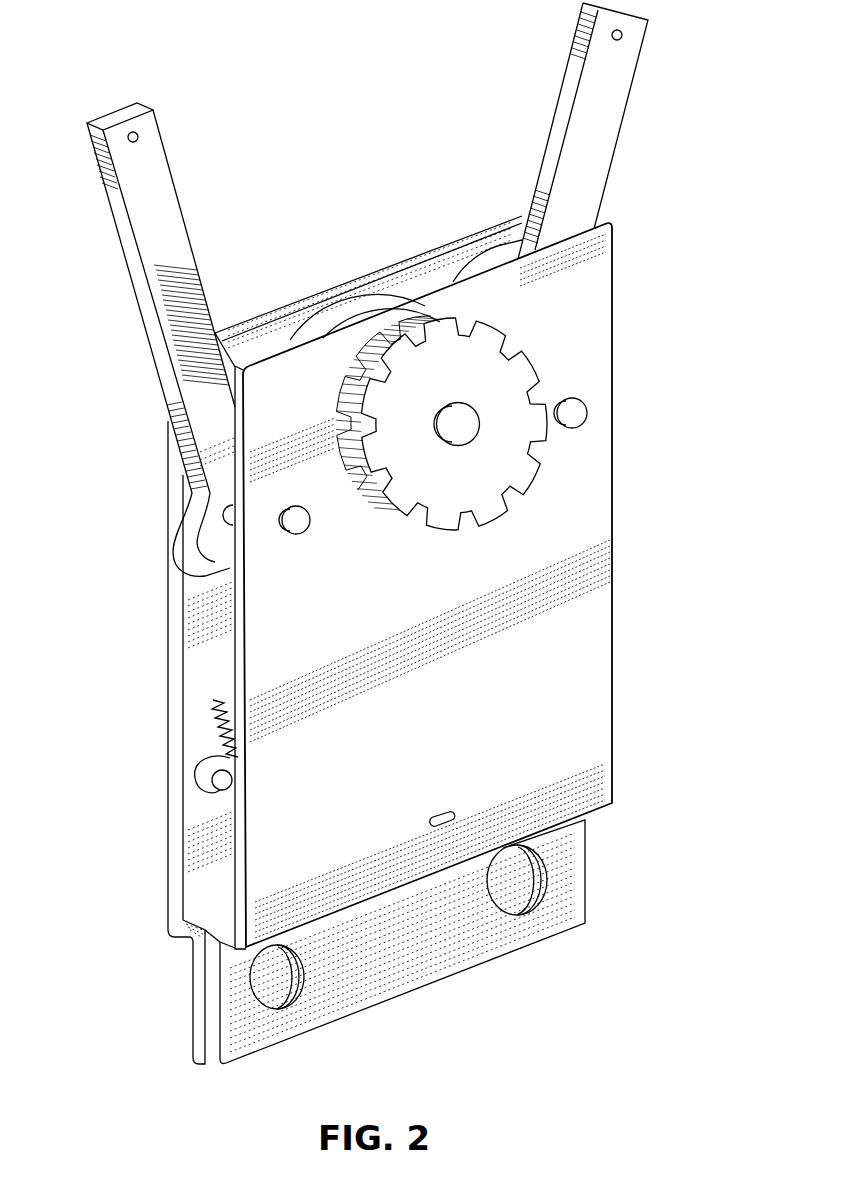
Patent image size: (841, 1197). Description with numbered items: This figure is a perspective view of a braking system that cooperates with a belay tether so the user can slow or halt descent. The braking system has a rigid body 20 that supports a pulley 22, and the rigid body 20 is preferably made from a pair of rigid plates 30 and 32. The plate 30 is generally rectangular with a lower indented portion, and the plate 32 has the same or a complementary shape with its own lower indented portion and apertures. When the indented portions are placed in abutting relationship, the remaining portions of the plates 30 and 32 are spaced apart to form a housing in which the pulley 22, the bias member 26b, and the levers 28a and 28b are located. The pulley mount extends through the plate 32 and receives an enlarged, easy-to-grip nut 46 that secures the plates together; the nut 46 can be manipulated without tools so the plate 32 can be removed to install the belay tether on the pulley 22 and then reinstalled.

The rigid body 20 is at (384, 640).
The pulley 22 is at (326, 300).
The bias member 26b is at (208, 733).
The lever 28a is at (608, 123).
The lever 28b is at (147, 230).
The rigid plate 30 is at (170, 650).
The rigid plate 32 is at (610, 727).
The nut 46 is at (527, 352).